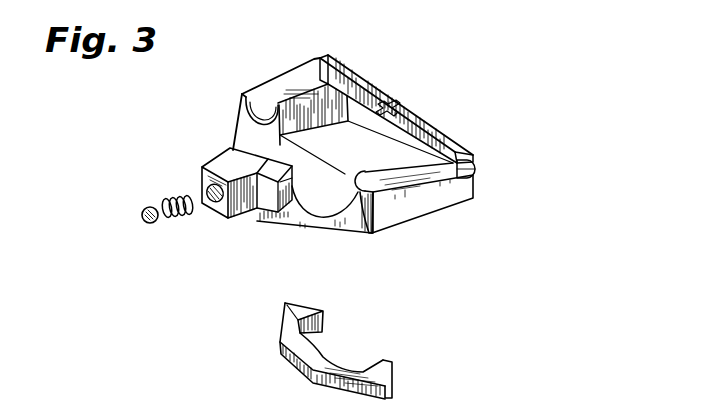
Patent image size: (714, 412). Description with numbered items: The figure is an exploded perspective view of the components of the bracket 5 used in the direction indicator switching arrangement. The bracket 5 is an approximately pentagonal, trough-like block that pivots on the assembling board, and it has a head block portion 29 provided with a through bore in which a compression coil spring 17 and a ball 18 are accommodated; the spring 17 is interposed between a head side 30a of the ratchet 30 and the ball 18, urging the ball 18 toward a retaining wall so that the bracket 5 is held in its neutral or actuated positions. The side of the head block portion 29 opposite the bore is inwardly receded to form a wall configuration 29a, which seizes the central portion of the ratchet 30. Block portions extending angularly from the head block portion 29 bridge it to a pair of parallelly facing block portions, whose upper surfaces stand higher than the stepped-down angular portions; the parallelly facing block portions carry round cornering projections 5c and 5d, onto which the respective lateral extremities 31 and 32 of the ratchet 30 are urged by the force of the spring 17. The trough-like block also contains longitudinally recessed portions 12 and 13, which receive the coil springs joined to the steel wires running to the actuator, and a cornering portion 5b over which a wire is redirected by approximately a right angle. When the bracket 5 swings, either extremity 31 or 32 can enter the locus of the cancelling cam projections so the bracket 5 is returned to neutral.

The bracket 5 is at (292, 79).
The cornering portion 5b is at (476, 166).
The round cornering projection 5c is at (374, 214).
The round cornering projection 5d is at (280, 126).
The longitudinally recessed portion 12 is at (372, 88).
The longitudinally recessed portion 13 is at (422, 131).
The spring 17 is at (186, 213).
The ball 18 is at (150, 224).
The head block portion 29 is at (232, 157).
The wall configuration 29a is at (286, 182).
The ratchet 30 is at (318, 360).
The head side 30a is at (298, 370).
The lateral extremity 31 is at (388, 357).
The lateral extremity 32 is at (312, 308).